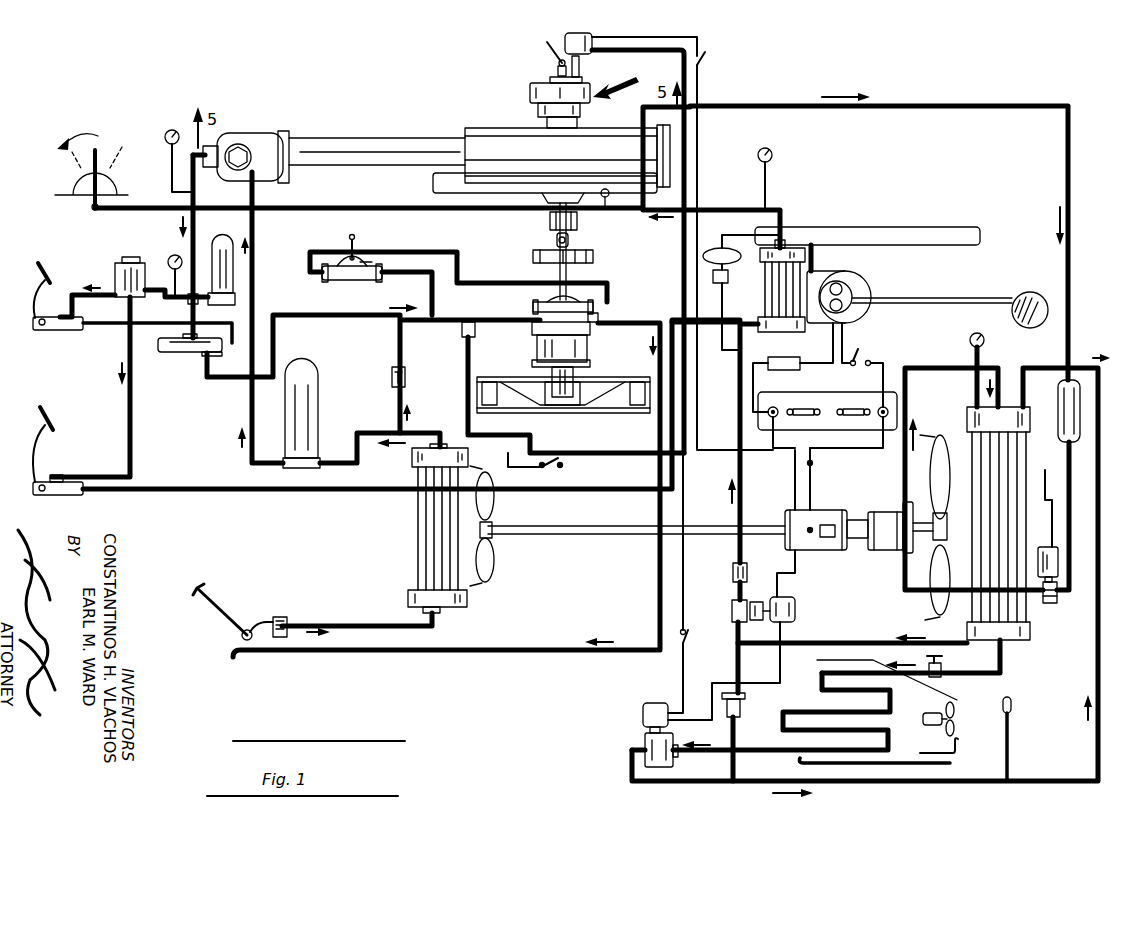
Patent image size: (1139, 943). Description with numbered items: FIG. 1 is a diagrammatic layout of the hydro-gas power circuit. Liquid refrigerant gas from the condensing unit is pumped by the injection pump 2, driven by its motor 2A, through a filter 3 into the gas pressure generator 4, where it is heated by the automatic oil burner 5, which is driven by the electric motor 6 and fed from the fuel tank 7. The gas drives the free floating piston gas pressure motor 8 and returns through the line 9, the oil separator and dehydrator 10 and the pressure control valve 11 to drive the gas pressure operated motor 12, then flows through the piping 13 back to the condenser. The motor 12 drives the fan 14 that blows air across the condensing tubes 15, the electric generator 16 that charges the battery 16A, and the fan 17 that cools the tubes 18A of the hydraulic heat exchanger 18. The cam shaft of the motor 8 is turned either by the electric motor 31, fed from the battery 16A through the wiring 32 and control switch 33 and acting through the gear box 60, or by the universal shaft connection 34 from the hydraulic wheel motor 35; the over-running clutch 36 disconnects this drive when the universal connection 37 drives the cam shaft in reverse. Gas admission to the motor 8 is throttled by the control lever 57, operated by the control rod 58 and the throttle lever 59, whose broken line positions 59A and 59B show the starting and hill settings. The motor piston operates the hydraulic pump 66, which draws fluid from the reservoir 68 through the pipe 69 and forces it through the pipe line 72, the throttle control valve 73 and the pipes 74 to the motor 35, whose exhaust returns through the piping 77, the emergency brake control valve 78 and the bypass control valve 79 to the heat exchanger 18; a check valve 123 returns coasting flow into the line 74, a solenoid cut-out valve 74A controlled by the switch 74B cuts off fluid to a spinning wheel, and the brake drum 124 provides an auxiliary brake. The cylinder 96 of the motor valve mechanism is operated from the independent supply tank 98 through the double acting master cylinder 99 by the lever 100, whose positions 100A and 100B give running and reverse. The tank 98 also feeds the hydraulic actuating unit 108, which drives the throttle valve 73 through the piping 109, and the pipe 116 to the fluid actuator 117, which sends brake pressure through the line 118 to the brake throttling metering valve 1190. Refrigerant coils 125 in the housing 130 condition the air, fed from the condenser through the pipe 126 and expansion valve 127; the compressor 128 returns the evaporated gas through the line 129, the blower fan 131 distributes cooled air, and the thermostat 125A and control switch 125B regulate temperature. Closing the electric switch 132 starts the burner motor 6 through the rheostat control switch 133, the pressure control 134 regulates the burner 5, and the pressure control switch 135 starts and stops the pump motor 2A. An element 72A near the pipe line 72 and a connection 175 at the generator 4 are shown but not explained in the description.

The injection pump 2 is at (737, 616).
The driving motor 2A is at (795, 610).
The filter 3 is at (733, 573).
The gas pressure generator unit 4 is at (803, 256).
The automatic oil burner 5 is at (860, 279).
The electric motor 6 is at (848, 297).
The tank 7 is at (1036, 297).
The gas pressure motor 8 is at (498, 143).
The line 9 is at (908, 104).
The oil separator and dehydrator 10 is at (1082, 415).
The pressure control valve 11 is at (1055, 603).
The gas pressure operated motor 12 is at (883, 550).
The piping 13 is at (908, 402).
The fan 14 is at (933, 467).
The condensing tubes 15 is at (1013, 483).
The electric generator 16 is at (818, 518).
The battery 16A is at (802, 402).
The fan 17 is at (493, 560).
The hydraulic heat exchanger 18 is at (412, 452).
The tubes 18A is at (427, 530).
The electric motor 31 is at (593, 37).
The wiring 32 is at (688, 92).
The control switch 33 is at (705, 60).
The universal shaft connection 34 is at (569, 241).
The hydraulic wheel motor 35 is at (575, 347).
The over-running clutch 36 is at (550, 220).
The universal connection 37 is at (545, 43).
The control lever 57 is at (610, 199).
The control rod 58 is at (323, 206).
The throttle lever 59 is at (97, 149).
The broken line position 59A is at (117, 157).
The broken line position 59B is at (72, 162).
The gear box 60 is at (584, 98).
The hydraulic pump 66 is at (343, 148).
The reservoir 68 is at (310, 410).
The pipe 69 is at (255, 265).
The pipe line 72 is at (195, 232).
The accumulator 72A is at (233, 247).
The throttle control valve 73 is at (190, 347).
The pipes 74 is at (338, 317).
The solenoid cut-out valve 74A is at (462, 333).
The switch 74B is at (562, 466).
The piping 77 is at (660, 412).
The emergency brake control valve 78 is at (246, 630).
The bypass control valve 79 is at (283, 618).
The cylinder 96 is at (545, 300).
The independent hydraulic liquid supply tank 98 is at (125, 278).
The double acting master cylinder 99 is at (384, 265).
The lever 100 is at (352, 235).
The position 100A is at (372, 262).
The broken line position 100B is at (345, 260).
The hydraulic actuating unit 108 is at (68, 332).
The piping 109 is at (118, 328).
The pipe 116 is at (133, 432).
The fluid actuator 117 is at (65, 478).
The line 118 is at (348, 490).
The check valve 123 is at (406, 378).
The brake drum 124 is at (594, 258).
The refrigerant coils 125 is at (822, 708).
The thermostat 125A is at (1010, 703).
The control switch 125B is at (740, 706).
The pipe 126 is at (1000, 672).
The expansion valve 127 is at (941, 674).
The compressor 128 is at (645, 745).
The line 129 is at (1098, 645).
The housing 130 is at (957, 753).
The blower fan 131 is at (955, 722).
The electric switch 132 is at (862, 351).
The automatic rheostat control switch 133 is at (790, 360).
The pressure control 134 is at (720, 246).
The automatic pressure control switch 135 is at (1058, 560).
The conduit 175 is at (782, 203).
The brake throttling metering valve 1190 is at (598, 316).